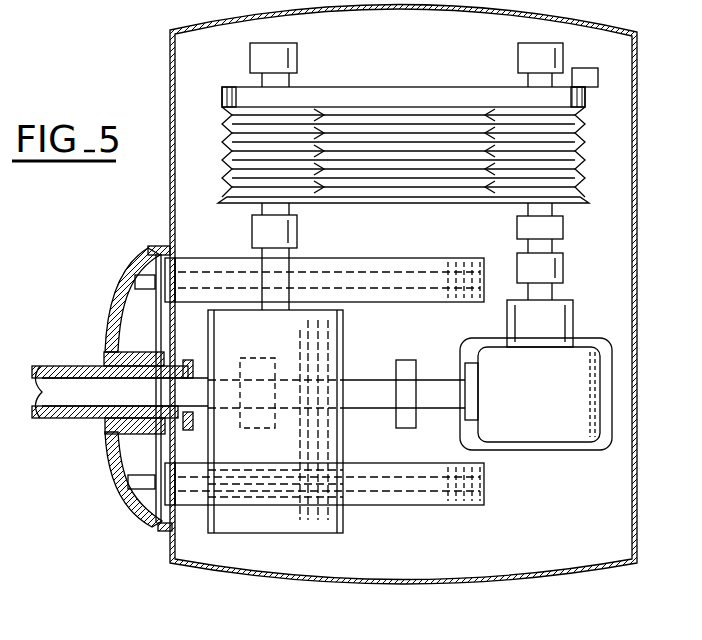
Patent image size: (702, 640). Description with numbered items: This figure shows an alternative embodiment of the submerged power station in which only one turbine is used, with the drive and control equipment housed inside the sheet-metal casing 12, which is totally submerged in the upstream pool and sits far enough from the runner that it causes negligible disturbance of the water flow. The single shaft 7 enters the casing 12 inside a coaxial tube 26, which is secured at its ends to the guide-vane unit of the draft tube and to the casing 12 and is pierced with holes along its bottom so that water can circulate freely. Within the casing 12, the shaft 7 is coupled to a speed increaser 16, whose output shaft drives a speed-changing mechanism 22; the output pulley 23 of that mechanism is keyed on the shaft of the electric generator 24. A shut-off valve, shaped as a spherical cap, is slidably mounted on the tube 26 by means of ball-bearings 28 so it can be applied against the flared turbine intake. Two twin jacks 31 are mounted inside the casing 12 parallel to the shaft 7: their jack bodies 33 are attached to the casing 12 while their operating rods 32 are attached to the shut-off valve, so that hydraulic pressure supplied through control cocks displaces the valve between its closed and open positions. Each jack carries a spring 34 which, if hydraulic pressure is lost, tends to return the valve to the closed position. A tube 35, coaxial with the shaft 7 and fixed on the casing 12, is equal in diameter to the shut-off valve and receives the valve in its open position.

The single shaft 7 is at (63, 383).
The sheet-metal casing 12 is at (645, 203).
The speed increaser 16 is at (552, 430).
The speed-changing mechanism 22 is at (406, 84).
The output pulley 23 is at (227, 158).
The electric generator 24 is at (263, 522).
The coaxial tube 26 is at (70, 418).
The ball-bearings 28 is at (122, 356).
The twin jacks 31 is at (421, 255).
The operating rods 32 is at (148, 276).
The jack bodies 33 is at (365, 268).
The spring 34 is at (466, 264).
The tube 35 is at (162, 535).